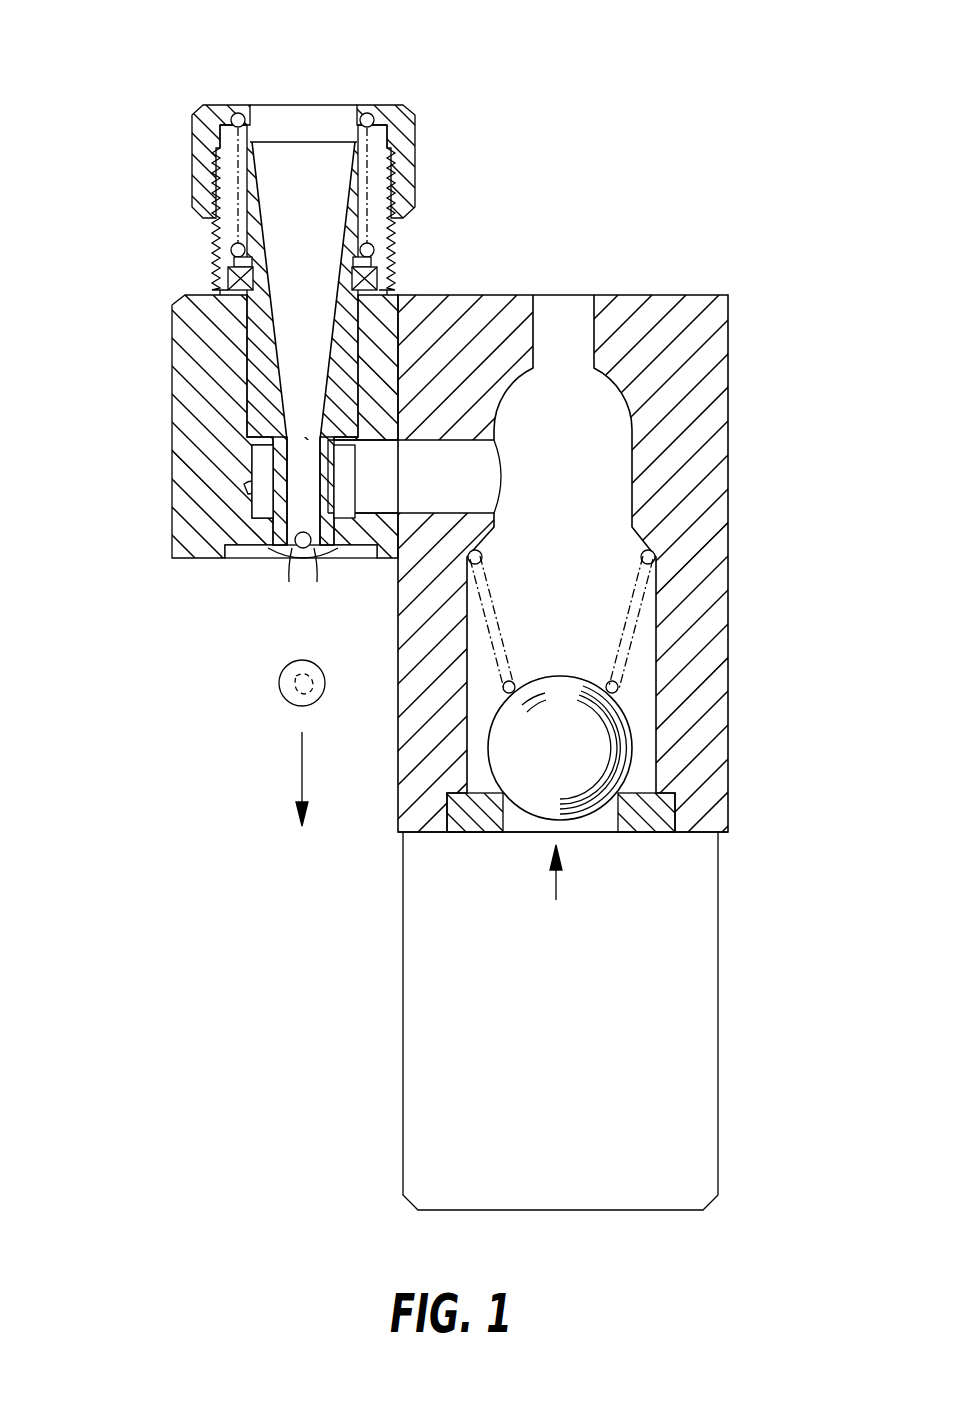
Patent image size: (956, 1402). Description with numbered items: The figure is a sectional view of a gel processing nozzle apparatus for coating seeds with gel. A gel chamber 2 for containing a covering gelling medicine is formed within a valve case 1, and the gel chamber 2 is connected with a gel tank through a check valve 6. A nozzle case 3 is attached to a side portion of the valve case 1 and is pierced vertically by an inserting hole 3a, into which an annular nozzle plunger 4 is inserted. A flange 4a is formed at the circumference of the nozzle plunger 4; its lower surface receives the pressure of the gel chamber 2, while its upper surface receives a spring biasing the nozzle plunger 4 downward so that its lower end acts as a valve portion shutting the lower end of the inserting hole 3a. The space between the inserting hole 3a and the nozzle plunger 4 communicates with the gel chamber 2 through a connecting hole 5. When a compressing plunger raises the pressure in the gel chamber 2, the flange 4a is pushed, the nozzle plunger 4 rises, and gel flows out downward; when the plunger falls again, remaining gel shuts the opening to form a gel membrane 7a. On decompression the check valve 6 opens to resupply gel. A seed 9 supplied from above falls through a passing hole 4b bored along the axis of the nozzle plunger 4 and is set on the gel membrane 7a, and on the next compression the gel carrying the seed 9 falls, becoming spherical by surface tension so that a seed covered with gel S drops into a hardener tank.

The valve case 1 is at (720, 484).
The gel chamber 2 is at (551, 513).
The nozzle case 3 is at (172, 478).
The inserting hole 3a is at (252, 492).
The nozzle plunger 4 is at (262, 333).
The flange 4a is at (258, 456).
The passing hole 4b is at (298, 243).
The connecting hole 5 is at (421, 504).
The check valve 6 is at (556, 900).
The gel membrane 7a is at (310, 548).
The seed 9 is at (293, 550).
The seed covered with gel S is at (282, 700).